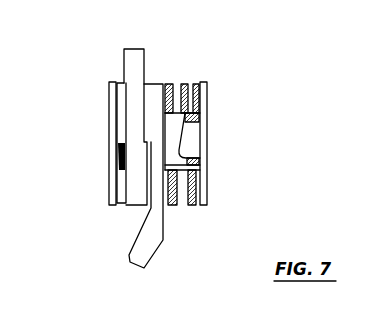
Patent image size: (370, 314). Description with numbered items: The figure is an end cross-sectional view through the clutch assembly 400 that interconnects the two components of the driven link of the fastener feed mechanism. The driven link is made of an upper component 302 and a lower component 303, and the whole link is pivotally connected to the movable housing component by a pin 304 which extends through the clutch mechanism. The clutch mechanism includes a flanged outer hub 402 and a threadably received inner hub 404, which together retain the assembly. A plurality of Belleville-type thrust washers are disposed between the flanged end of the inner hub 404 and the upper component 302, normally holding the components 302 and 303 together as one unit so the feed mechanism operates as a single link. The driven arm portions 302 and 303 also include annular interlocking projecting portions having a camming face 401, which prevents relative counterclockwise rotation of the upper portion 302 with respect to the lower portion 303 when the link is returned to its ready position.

The clutch assembly 400 is at (100, 67).
The upper component of the driven link 302 is at (138, 53).
The driven link component 303 is at (158, 245).
The pin 304 is at (192, 140).
The camming face 401 is at (142, 112).
The flanged outer hub 402 is at (110, 140).
The inner hub 404 is at (208, 88).